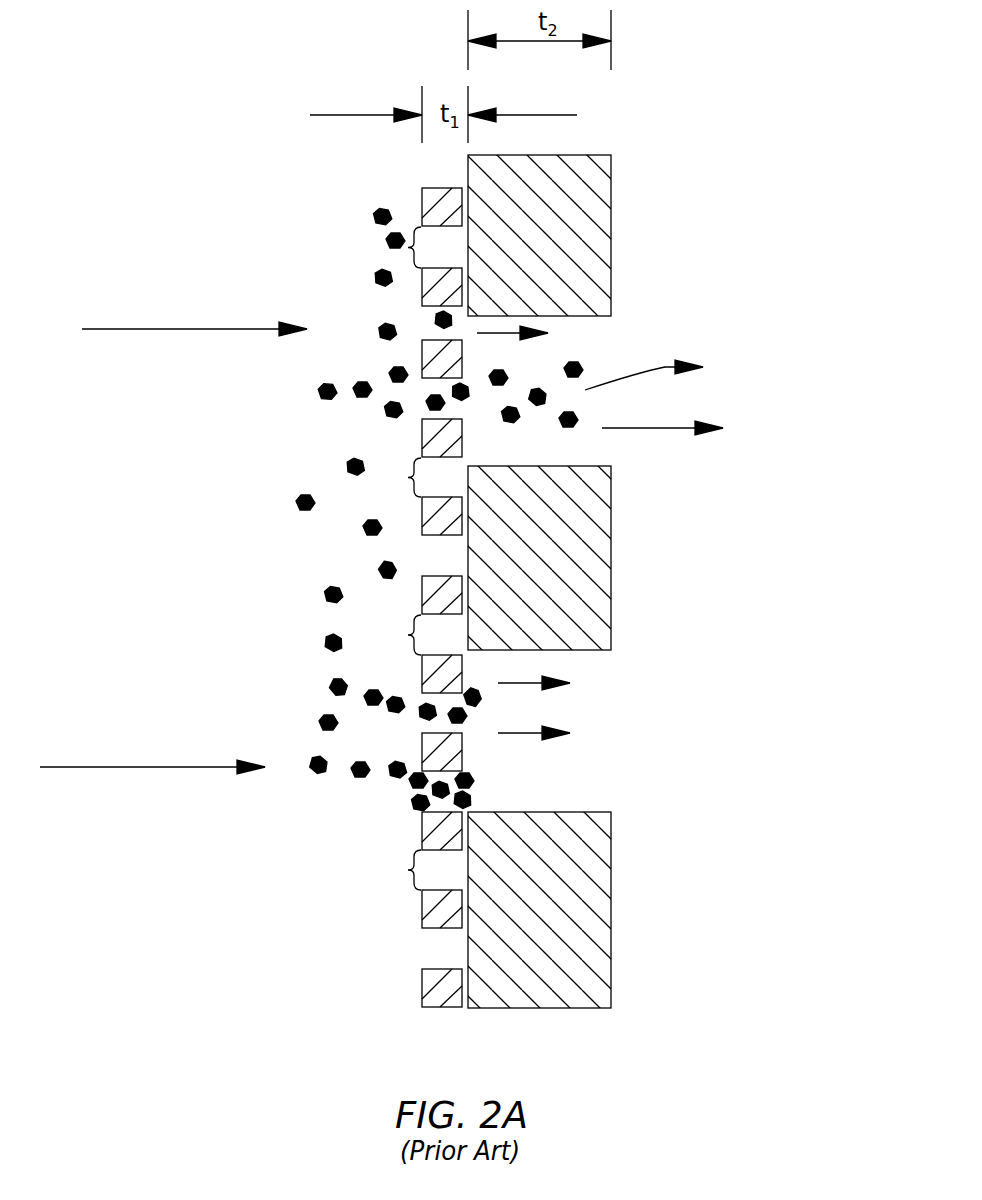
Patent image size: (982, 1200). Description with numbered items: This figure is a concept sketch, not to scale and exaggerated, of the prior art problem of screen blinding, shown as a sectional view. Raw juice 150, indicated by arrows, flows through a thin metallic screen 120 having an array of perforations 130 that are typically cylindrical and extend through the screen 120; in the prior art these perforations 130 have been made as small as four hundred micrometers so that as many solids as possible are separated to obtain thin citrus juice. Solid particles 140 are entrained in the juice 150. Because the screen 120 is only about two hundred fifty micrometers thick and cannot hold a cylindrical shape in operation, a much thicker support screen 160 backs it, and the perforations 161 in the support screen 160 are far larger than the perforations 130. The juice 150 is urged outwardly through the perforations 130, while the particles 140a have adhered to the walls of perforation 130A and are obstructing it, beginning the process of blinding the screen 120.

The screen 120 is at (422, 828).
The perforations 130 is at (396, 558).
The perforation 130A is at (490, 775).
The solid particles 140 is at (375, 212).
The particles 140a is at (416, 800).
The raw juice 150 is at (140, 328).
The support screen 160 is at (611, 222).
The perforations 161 is at (595, 800).